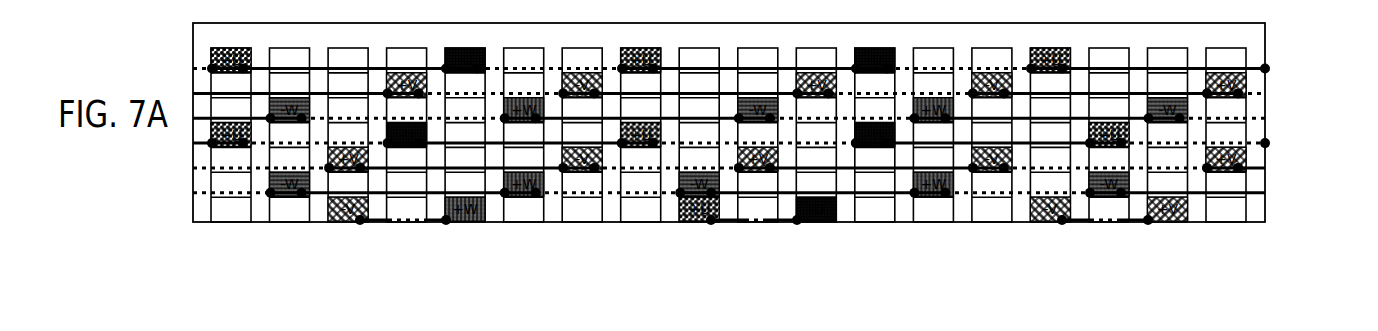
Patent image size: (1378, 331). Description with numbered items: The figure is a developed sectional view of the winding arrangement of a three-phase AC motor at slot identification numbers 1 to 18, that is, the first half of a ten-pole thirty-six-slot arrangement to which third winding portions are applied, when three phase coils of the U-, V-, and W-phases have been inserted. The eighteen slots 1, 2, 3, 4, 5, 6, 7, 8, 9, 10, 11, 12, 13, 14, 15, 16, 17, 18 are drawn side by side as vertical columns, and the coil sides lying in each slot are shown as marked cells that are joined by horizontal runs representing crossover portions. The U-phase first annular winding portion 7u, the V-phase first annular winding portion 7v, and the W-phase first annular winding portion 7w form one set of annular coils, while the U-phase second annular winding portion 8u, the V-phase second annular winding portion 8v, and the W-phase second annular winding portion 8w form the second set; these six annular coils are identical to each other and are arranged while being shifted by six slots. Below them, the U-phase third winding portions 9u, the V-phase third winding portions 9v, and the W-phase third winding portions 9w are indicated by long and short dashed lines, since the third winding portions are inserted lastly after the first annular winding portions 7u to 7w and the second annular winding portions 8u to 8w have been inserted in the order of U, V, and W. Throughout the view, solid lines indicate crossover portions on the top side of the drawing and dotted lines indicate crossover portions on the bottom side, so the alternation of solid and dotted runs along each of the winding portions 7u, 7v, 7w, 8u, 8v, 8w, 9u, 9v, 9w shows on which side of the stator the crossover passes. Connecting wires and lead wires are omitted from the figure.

The U-phase first annular winding portion 7u is at (1265, 69).
The V-phase first annular winding portion 7v is at (1265, 93).
The W-phase first annular winding portion 7w is at (1265, 118).
The U-phase second annular winding portion 8u is at (1265, 143).
The V-phase second annular winding portion 8v is at (1265, 168).
The W-phase second annular winding portion 8w is at (1265, 193).
The U-phase third winding portions 9u is at (752, 222).
The V-phase third winding portions 9v is at (1103, 222).
The W-phase third winding portions 9w is at (412, 222).
The slot identification number 1 is at (231, 123).
The slot identification number 2 is at (290, 123).
The slot identification number 3 is at (348, 123).
The slot identification number 4 is at (407, 123).
The slot identification number 5 is at (465, 123).
The slot identification number 6 is at (524, 123).
The slot identification number 7 is at (582, 123).
The slot identification number 8 is at (641, 123).
The slot identification number 9 is at (699, 123).
The slot identification number 10 is at (758, 123).
The slot identification number 11 is at (816, 123).
The slot identification number 12 is at (875, 123).
The slot identification number 13 is at (933, 123).
The slot identification number 14 is at (992, 123).
The slot identification number 15 is at (1050, 123).
The slot identification number 16 is at (1109, 123).
The slot identification number 17 is at (1168, 123).
The slot identification number 18 is at (1226, 123).